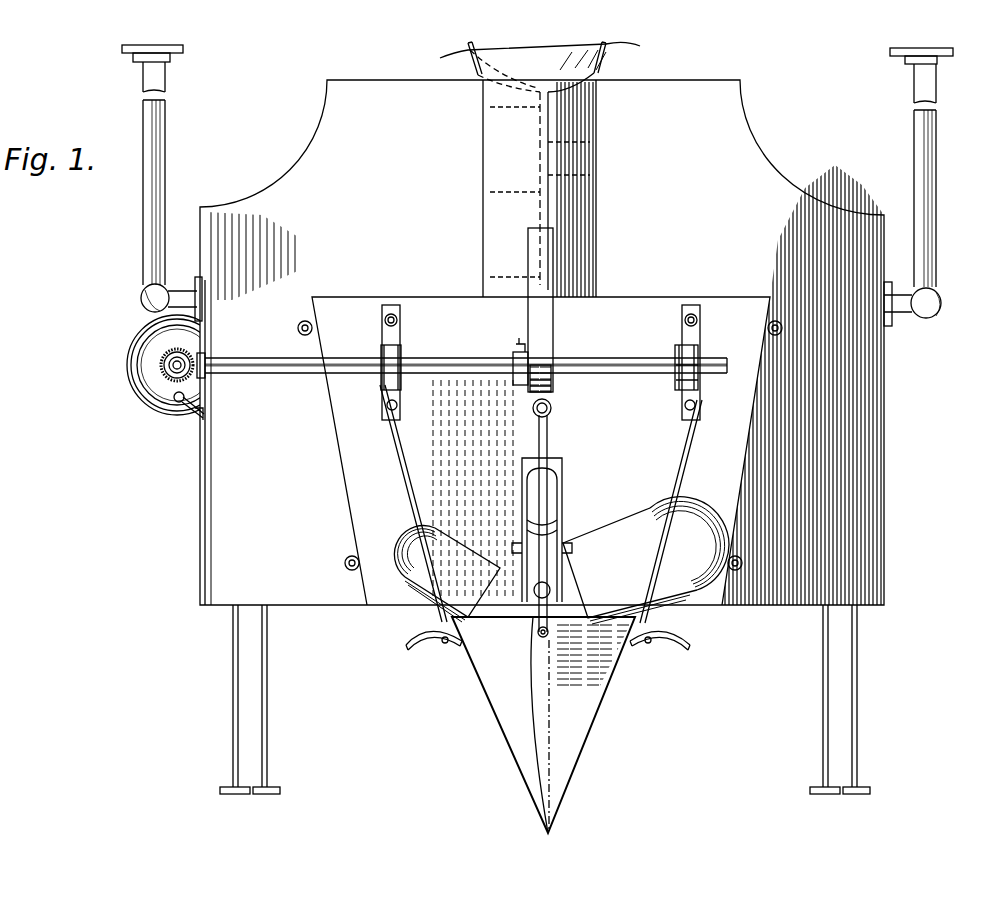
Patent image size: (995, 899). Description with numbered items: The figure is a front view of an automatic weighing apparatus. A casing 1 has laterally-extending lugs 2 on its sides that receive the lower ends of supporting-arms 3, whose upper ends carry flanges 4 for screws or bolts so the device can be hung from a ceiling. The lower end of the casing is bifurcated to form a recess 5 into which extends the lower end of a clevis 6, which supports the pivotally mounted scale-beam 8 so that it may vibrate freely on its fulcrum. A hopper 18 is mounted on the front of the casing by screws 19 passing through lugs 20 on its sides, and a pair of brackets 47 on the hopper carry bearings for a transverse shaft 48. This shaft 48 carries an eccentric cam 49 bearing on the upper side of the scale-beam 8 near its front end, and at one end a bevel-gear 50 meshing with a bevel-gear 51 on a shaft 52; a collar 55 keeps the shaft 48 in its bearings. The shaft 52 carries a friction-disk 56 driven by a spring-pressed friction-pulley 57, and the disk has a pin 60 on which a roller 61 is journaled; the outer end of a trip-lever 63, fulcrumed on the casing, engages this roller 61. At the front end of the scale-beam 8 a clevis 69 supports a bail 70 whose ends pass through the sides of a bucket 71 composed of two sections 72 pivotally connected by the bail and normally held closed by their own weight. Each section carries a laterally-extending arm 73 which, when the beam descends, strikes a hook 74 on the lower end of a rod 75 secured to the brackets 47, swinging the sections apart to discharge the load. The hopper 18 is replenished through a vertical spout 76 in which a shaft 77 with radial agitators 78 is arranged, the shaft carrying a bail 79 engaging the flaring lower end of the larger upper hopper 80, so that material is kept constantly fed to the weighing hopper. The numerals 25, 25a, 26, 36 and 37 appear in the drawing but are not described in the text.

The casing 1 is at (395, 160).
The laterally-extending lugs 2 is at (150, 297).
The supporting-arms 3 is at (150, 218).
The flanges 4 is at (175, 55).
The recess 5 is at (562, 462).
The clevis 6 is at (560, 497).
The scale-beam 8 is at (550, 392).
The hopper 18 is at (541, 451).
The screws 19 is at (305, 334).
The lugs 20 is at (298, 330).
The cam 25 is at (412, 538).
The cam 25a is at (700, 515).
The cam plate 26 is at (452, 575).
The leg 36 is at (230, 706).
The foot 37 is at (233, 794).
The brackets 47 is at (398, 312).
The shaft 48 is at (450, 370).
The eccentric cam 49 is at (548, 250).
The bevel-gear 50 is at (205, 360).
The bevel-gear 51 is at (170, 372).
The shaft 52 is at (178, 378).
The collar 55 is at (678, 380).
The friction-disk 56 is at (160, 355).
The friction-pulley 57 is at (130, 350).
The pin 60 is at (180, 403).
The roller 61 is at (205, 392).
The trip-lever 63 is at (203, 420).
The clevis 69 is at (552, 410).
The bail 70 is at (540, 497).
The bucket 71 is at (557, 725).
The sections 72 is at (490, 690).
The laterally-extending arm 73 is at (410, 651).
The hooks 74 is at (445, 645).
The rods 75 is at (403, 470).
The spout 76 is at (598, 205).
The shaft 77 is at (550, 178).
The agitators 78 is at (488, 193).
The bail 79 is at (612, 45).
The upper hopper 80 is at (466, 60).